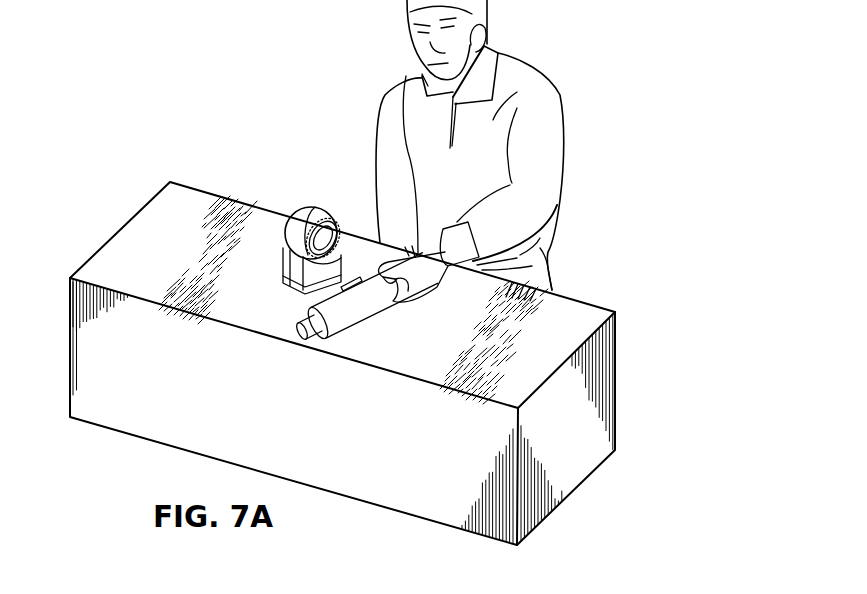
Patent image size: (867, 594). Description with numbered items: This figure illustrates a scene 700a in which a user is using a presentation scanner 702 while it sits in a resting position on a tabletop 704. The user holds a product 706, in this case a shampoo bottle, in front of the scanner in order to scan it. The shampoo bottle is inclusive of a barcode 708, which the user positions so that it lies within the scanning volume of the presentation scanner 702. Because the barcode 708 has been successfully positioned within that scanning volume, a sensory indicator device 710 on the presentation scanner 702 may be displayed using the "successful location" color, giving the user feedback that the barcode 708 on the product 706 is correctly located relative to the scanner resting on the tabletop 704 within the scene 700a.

The scene 700a is at (72, 492).
The presentation scanner 702 is at (302, 207).
The tabletop 704 is at (128, 232).
The product 706 is at (300, 318).
The barcode 708 is at (358, 288).
The sensory indicator device 710 is at (314, 206).